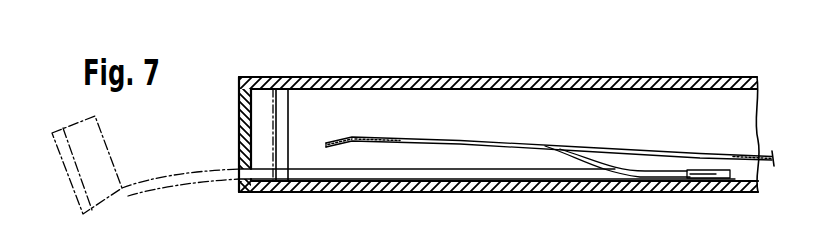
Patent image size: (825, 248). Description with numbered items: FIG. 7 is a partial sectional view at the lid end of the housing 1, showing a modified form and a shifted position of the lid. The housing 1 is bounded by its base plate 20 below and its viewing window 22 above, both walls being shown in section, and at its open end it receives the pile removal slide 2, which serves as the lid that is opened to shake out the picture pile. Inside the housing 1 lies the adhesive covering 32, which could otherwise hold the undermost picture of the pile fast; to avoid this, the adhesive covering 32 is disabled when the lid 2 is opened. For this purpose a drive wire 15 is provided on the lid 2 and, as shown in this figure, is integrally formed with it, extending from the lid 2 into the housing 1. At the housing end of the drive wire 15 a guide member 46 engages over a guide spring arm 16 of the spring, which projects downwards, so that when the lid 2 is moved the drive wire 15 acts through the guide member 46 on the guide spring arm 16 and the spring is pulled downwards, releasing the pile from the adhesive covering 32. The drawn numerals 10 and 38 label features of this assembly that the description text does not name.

The housing 1 is at (271, 77).
The pile removal slide 2 is at (98, 143).
The needle 10 is at (550, 100).
The drive wire 15 is at (177, 178).
The guide spring arm 16 is at (583, 158).
The base plate 20 is at (493, 192).
The viewing window 22 is at (447, 77).
The adhesive covering 32 is at (368, 138).
The proximal end of strip 38 is at (333, 143).
The guide member 46 is at (710, 174).